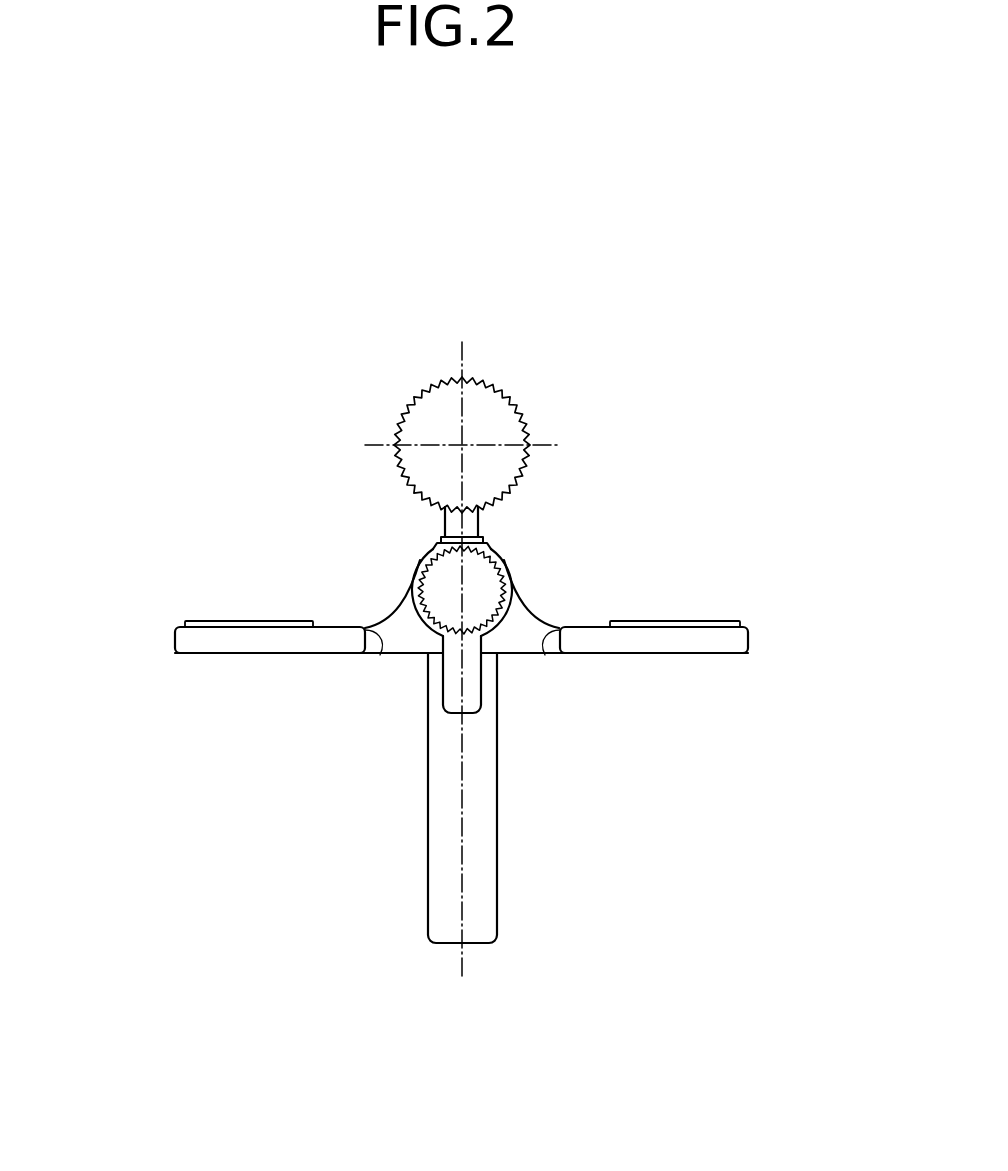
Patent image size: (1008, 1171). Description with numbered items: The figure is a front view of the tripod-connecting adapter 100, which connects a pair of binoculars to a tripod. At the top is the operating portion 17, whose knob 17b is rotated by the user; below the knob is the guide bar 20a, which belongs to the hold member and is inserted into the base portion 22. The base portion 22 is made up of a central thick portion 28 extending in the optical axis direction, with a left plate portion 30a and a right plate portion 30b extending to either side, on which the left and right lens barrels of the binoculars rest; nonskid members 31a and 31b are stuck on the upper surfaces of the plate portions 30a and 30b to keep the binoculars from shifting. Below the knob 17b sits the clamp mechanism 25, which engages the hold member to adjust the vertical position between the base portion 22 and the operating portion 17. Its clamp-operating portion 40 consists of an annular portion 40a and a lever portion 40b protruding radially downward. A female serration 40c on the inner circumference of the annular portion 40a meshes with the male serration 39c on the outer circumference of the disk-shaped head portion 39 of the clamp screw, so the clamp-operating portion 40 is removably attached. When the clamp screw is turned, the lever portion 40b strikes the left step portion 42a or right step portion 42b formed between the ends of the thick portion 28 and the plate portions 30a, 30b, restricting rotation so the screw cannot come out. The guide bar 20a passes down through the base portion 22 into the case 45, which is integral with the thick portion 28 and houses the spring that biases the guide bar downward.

The tripod-connecting adapter 100 is at (538, 310).
The operating portion 17 is at (560, 420).
The knob 17b is at (485, 408).
The guide bar 20a is at (447, 522).
The clamp mechanism 25 is at (515, 537).
The thick portion 28 is at (400, 622).
The head portion 39 is at (480, 585).
The male serration 39c is at (505, 592).
The clamp-operating portion 40 is at (428, 655).
The annular portion 40a is at (435, 552).
The lever portion 40b is at (470, 700).
The female serration 40c is at (423, 580).
The left step portion 42a is at (545, 655).
The right step portion 42b is at (380, 655).
The case 45 is at (475, 873).
The base portion 22 is at (208, 670).
The left plate portion 30a is at (735, 642).
The right plate portion 30b is at (197, 640).
The nonskid member 31a is at (715, 623).
The nonskid member 31b is at (208, 622).